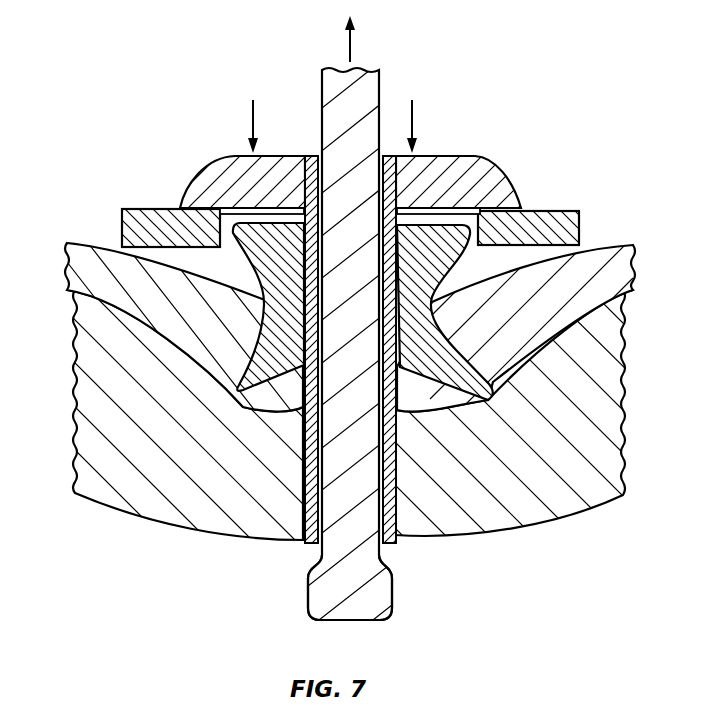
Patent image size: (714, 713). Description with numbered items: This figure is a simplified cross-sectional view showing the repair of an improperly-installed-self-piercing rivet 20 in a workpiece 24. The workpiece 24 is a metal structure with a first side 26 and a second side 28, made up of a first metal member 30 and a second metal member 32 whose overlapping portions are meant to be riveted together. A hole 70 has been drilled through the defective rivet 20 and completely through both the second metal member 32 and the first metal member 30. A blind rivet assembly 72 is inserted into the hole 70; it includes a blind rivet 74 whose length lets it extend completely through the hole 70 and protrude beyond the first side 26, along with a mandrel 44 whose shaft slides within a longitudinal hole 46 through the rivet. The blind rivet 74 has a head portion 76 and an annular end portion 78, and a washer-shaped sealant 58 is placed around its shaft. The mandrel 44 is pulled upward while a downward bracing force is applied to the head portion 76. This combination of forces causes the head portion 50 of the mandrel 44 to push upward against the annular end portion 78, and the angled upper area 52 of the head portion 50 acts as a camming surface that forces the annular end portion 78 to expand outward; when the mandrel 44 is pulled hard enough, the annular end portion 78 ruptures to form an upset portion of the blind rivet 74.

The improperly-installed-self-piercing rivet 20 is at (245, 265).
The workpiece 24 is at (93, 112).
The first side 26 is at (120, 515).
The second side 28 is at (78, 242).
The first metal member 30 is at (215, 492).
The second metal member 32 is at (140, 270).
The mandrel 44 is at (382, 86).
The hole 46 is at (320, 155).
The head portion 50 is at (392, 585).
The upper area 52 is at (385, 557).
The sealant 58 is at (167, 210).
The hole 70 is at (397, 530).
The blind rivet assembly 72 is at (262, 80).
The blind rivet 74 is at (449, 148).
The head portion 76 is at (513, 175).
The annular end portion 78 is at (313, 545).